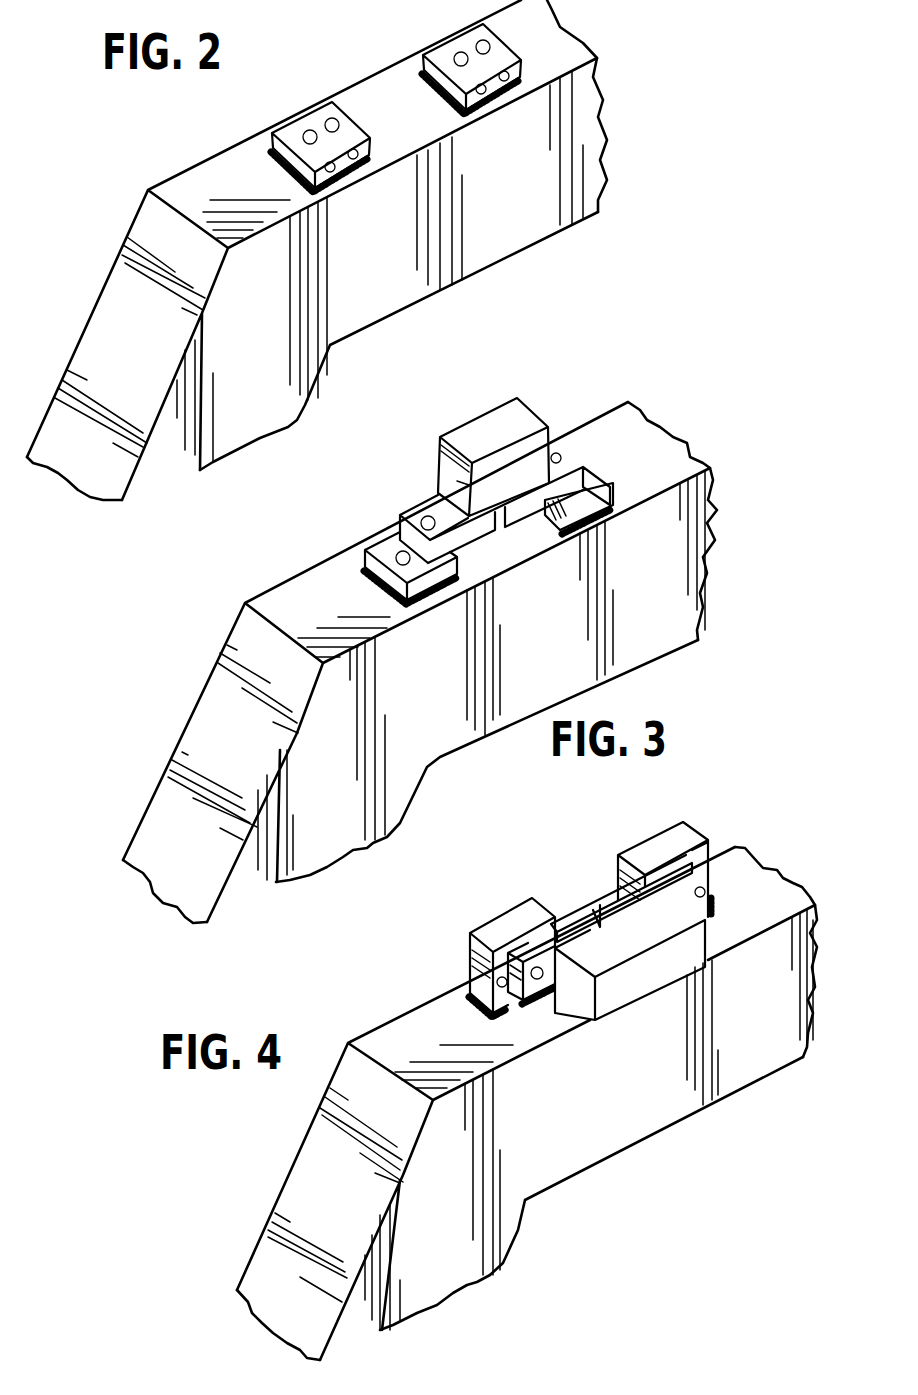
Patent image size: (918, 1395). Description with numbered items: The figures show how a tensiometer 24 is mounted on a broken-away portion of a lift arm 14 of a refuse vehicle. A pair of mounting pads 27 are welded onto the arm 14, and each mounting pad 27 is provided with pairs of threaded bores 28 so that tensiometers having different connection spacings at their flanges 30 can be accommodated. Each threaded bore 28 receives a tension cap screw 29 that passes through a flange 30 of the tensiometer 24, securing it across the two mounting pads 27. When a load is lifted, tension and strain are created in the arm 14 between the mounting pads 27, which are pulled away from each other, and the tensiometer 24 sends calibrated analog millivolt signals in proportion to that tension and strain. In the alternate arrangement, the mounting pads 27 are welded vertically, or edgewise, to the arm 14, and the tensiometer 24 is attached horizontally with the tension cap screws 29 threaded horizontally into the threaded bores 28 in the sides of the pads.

In FIG. 2, the arm 14 is at (517, 243).
In FIG. 3, the arm 14 is at (667, 633).
In FIG. 4, the arm 14 is at (672, 1117).
In FIG. 3, the tensiometer 24 is at (482, 417).
In FIG. 4, the tensiometer 24 is at (632, 1000).
In FIG. 2, the mounting pad 27 is at (328, 182).
In FIG. 4, the mounting pad 27 is at (506, 912).
In FIG. 2, the threaded bore 28 is at (306, 132).
In FIG. 4, the threaded bore 28 is at (468, 983).
In FIG. 3, the tension cap screw 29 is at (422, 520).
In FIG. 4, the tension cap screw 29 is at (538, 980).
In FIG. 3, the flange 30 is at (437, 495).
In FIG. 4, the flange 30 is at (610, 900).